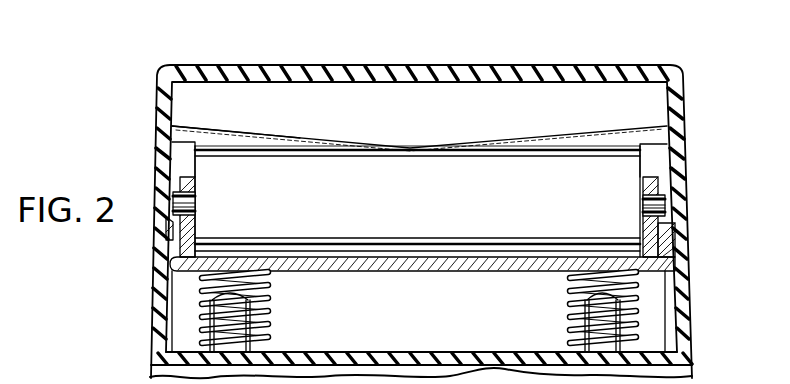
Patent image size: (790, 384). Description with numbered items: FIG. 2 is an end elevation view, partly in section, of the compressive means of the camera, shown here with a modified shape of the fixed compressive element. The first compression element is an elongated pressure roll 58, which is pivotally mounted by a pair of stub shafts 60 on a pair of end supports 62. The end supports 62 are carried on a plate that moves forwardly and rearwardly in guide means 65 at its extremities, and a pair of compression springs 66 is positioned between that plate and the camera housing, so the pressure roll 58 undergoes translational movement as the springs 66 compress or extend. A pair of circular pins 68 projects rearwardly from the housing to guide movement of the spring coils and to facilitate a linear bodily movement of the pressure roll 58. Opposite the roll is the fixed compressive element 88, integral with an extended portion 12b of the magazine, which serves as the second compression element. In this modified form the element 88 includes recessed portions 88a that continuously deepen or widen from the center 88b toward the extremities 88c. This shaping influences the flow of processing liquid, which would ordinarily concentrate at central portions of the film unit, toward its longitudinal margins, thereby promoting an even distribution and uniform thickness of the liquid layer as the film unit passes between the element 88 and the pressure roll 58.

The extended portion of the magazine 12b is at (600, 43).
The fixed compressive element 88 is at (432, 114).
The extremities 88c is at (262, 119).
The center 88b is at (434, 149).
The recessed portions 88a is at (586, 151).
The pressure roll 58 is at (431, 194).
The stub shafts 60 is at (668, 203).
The end supports 62 is at (683, 243).
The guide means 65 is at (668, 285).
The compression springs 66 is at (640, 308).
The circular pins 68 is at (590, 338).